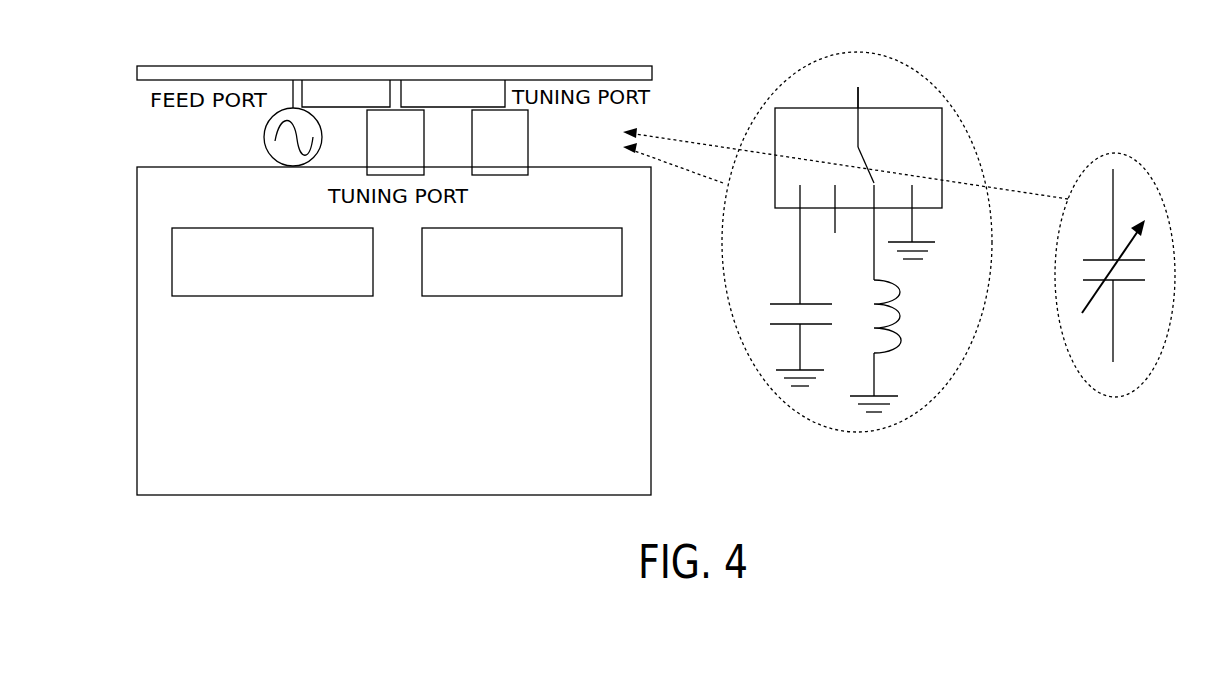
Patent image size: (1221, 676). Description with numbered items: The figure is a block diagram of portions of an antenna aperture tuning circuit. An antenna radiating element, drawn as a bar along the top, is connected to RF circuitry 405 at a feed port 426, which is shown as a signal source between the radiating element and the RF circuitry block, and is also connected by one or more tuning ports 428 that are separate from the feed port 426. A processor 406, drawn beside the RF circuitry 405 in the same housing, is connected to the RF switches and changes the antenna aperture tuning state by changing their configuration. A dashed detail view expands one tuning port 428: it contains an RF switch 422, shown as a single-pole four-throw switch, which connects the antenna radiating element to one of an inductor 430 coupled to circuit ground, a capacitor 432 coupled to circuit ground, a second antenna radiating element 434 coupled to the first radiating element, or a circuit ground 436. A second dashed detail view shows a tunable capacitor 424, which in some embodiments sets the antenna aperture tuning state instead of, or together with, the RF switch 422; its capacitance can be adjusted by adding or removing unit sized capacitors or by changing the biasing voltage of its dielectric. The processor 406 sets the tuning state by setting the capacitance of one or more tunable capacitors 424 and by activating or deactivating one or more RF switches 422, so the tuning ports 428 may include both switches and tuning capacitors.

The RF circuitry 405 is at (322, 296).
The processor 406 is at (568, 296).
The RF switch 422 is at (942, 122).
The tunable capacitor 424 is at (1113, 182).
The feed port 426 is at (267, 148).
The tuning port 428 is at (380, 107).
The inductor 430 is at (875, 355).
The capacitor 432 is at (806, 326).
The second antenna radiating element 434 is at (835, 233).
The circuit ground 436 is at (913, 224).